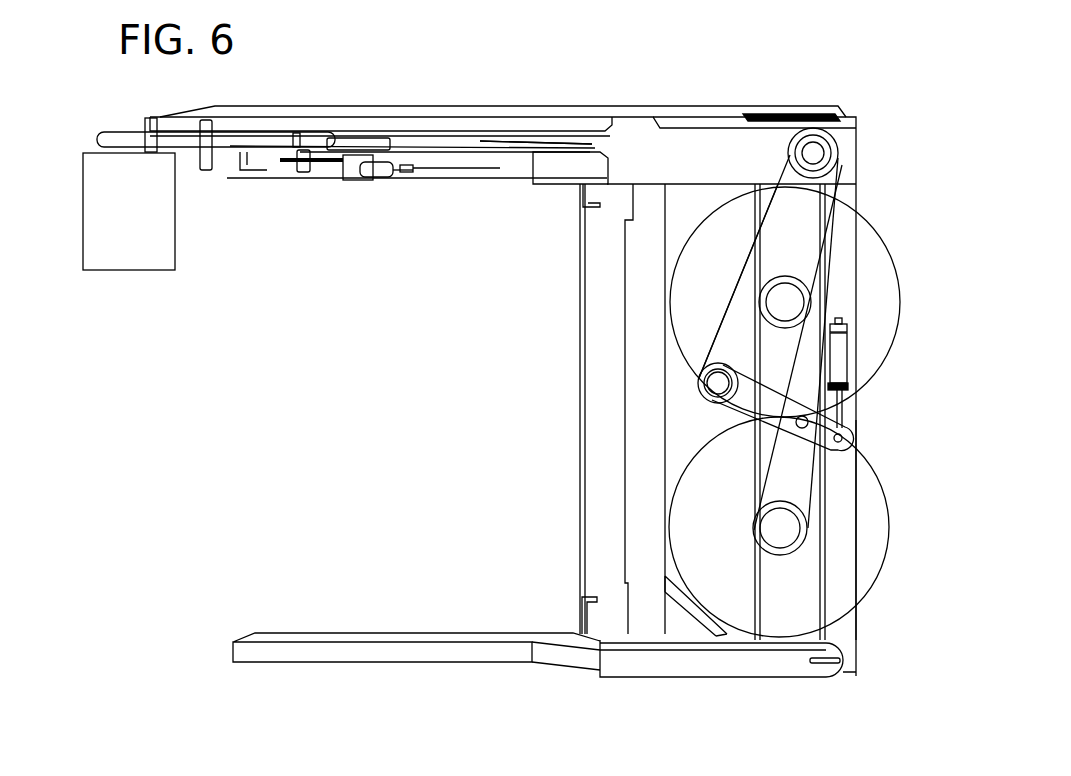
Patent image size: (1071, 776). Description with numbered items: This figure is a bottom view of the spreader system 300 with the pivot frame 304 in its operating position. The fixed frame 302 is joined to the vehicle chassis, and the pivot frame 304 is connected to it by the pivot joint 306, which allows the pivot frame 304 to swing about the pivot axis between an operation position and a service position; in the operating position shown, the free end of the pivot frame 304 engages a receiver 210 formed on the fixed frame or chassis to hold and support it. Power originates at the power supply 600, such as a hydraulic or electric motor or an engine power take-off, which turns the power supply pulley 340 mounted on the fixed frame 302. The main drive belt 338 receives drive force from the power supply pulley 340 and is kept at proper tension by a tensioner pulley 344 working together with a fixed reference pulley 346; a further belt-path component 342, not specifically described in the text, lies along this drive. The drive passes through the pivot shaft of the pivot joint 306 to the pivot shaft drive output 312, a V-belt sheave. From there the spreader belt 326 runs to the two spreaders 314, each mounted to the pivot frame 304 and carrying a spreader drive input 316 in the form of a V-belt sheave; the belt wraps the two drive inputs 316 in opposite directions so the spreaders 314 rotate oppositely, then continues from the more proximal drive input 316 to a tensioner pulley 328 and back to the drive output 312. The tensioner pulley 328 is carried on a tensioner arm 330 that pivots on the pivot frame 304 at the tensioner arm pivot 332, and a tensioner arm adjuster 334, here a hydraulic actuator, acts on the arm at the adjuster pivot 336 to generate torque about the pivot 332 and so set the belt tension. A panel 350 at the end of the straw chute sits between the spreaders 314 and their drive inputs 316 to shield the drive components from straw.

The wrapping apparatus 300 is at (838, 76).
The fixed frame 302 is at (462, 122).
The pivot frame 304 is at (843, 527).
The pivot joint 306 is at (797, 102).
The pivot shaft drive output 312 is at (835, 153).
The spreader 314 is at (878, 283).
The spreader drive input 316 is at (785, 302).
The spreader belt 326 is at (790, 160).
The tensioner pulley 328 is at (718, 383).
The tensioner arm 330 is at (733, 412).
The tensioner arm pivot 332 is at (800, 426).
The tensioner arm adjuster 334 is at (837, 362).
The adjuster pivot 336 is at (845, 440).
The main drive belt 338 is at (207, 173).
The power supply pulley 340 is at (123, 130).
The rod 342 is at (551, 125).
The tensioner pulley 344 is at (388, 150).
The fixed reference pulley 346 is at (312, 150).
The panel 350 is at (790, 603).
The receiver 210 is at (800, 672).
The power supply 600 is at (128, 273).